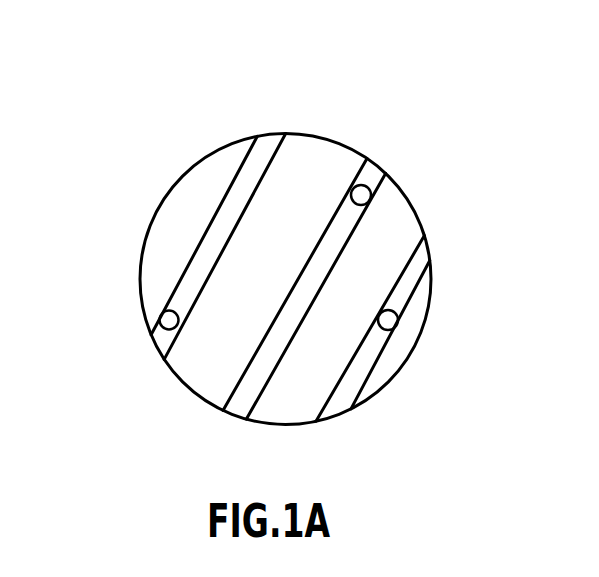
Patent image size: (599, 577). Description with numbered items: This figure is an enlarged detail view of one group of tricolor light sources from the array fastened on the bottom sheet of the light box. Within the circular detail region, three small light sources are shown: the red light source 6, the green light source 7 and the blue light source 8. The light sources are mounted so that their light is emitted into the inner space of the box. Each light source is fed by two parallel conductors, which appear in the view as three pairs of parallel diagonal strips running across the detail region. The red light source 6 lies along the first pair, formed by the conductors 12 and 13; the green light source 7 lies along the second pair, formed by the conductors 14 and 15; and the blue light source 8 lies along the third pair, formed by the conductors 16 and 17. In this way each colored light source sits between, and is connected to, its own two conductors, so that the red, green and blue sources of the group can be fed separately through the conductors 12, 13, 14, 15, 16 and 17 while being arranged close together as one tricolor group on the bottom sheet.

The conductor 12 is at (224, 197).
The conductor 13 is at (234, 230).
The conductor 14 is at (271, 327).
The conductor 15 is at (314, 304).
The conductor 16 is at (338, 374).
The conductor 17 is at (368, 379).
The red light source 6 is at (166, 321).
The green light source 7 is at (364, 196).
The blue light source 8 is at (390, 320).